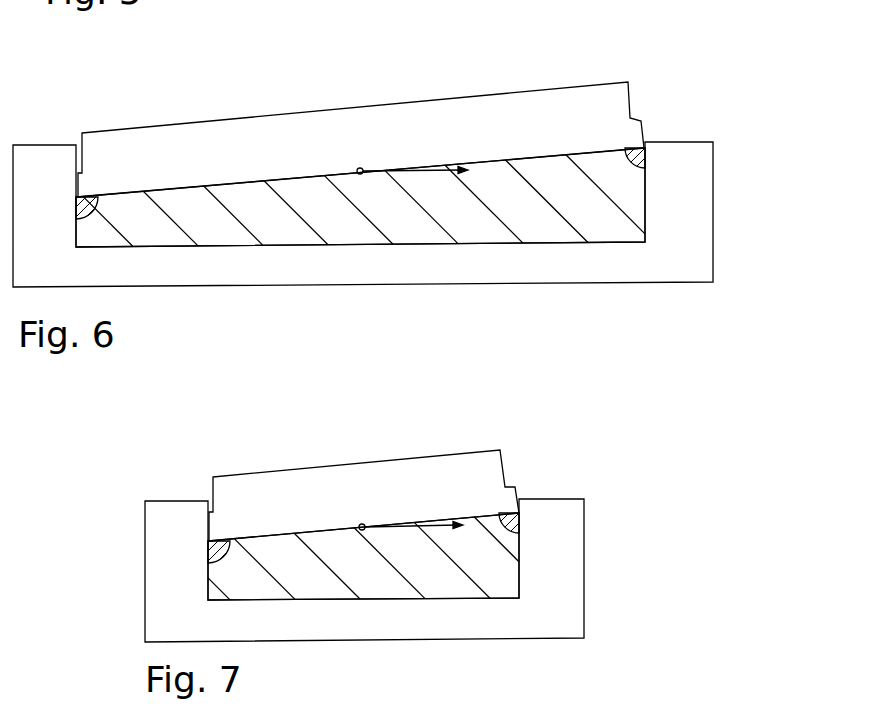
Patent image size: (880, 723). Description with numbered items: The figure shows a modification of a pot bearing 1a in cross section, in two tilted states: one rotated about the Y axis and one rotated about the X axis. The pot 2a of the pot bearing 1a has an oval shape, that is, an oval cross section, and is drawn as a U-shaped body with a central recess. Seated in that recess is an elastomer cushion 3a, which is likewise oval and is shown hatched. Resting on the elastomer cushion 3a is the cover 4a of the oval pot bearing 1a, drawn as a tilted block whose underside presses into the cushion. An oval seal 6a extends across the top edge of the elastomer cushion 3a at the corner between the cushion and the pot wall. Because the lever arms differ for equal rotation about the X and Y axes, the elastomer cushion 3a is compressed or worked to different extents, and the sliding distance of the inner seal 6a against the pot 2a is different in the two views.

In FIG. 6, the pot bearing 1a is at (647, 0).
In FIG. 7, the pot bearing 1a is at (455, 422).
In FIG. 6, the pot 2a is at (677, 197).
In FIG. 7, the pot 2a is at (547, 563).
In FIG. 6, the elastomer cushion 3a is at (592, 222).
In FIG. 7, the elastomer cushion 3a is at (463, 587).
In FIG. 6, the cover 4a is at (625, 130).
In FIG. 7, the cover 4a is at (497, 495).
In FIG. 6, the seal 6a is at (642, 154).
In FIG. 7, the seal 6a is at (512, 520).